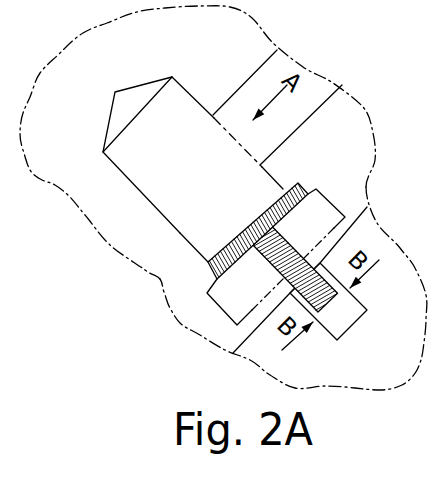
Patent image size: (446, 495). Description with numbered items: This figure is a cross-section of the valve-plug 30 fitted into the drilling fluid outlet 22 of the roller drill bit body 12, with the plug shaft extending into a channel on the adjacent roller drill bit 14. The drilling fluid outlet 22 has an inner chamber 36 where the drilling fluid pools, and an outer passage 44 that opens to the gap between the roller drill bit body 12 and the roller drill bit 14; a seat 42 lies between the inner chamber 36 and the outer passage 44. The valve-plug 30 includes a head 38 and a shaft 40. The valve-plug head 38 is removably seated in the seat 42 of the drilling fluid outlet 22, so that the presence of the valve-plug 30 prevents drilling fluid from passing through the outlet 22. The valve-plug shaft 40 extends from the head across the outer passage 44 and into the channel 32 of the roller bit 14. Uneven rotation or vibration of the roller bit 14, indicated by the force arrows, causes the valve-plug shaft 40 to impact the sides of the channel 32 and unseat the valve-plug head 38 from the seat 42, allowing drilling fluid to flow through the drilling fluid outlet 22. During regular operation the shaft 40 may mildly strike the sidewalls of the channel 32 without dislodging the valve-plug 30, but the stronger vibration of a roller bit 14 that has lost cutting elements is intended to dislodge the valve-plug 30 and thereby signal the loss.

The roller drill bit body 12 is at (78, 128).
The roller drill bit 14 is at (418, 314).
The drilling fluid outlet 22 is at (112, 161).
The valve-plug 30 is at (262, 200).
The channel 32 is at (350, 327).
The inner chamber 36 is at (211, 184).
The valve-plug head 38 is at (236, 238).
The valve-plug shaft 40 is at (300, 254).
The seat 42 is at (205, 262).
The outer passage 44 is at (259, 304).